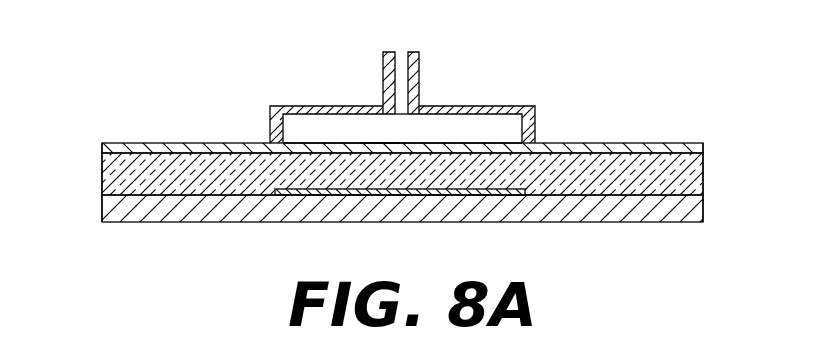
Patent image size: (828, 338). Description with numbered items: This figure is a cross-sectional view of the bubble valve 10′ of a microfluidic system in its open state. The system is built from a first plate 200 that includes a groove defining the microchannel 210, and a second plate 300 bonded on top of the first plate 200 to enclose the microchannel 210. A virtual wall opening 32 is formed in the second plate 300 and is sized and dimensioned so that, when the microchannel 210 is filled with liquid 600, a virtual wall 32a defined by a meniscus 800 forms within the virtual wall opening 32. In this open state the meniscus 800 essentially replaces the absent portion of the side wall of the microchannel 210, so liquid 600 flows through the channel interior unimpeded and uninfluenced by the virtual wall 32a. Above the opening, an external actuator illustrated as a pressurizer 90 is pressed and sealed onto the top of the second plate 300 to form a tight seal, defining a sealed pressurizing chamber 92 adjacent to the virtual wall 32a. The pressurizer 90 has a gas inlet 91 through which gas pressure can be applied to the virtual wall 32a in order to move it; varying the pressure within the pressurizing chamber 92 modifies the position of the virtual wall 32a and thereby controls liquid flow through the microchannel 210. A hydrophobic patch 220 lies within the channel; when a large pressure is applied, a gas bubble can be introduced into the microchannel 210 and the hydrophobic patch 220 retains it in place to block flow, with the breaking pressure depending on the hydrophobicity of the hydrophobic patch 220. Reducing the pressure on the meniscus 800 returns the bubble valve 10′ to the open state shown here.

The bubble valve 10′ is at (652, 68).
The virtual wall opening 32 is at (370, 150).
The virtual wall 32a is at (388, 150).
The pressurizer 90 is at (533, 107).
The gas inlet 91 is at (399, 51).
The pressurizing chamber 92 is at (415, 117).
The first plate 200 is at (243, 205).
The microchannel 210 is at (108, 145).
The hydrophobic patch 220 is at (400, 192).
The second plate 300 is at (638, 146).
The liquid 600 is at (705, 176).
The meniscus 800 is at (422, 148).